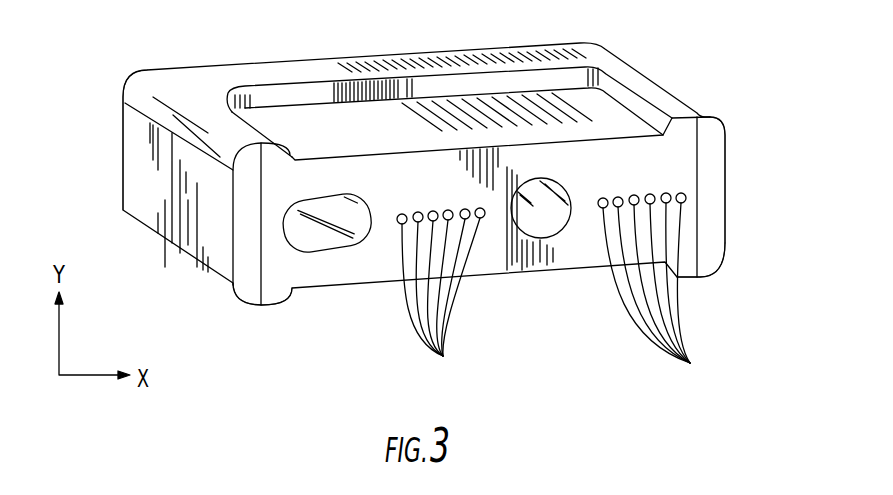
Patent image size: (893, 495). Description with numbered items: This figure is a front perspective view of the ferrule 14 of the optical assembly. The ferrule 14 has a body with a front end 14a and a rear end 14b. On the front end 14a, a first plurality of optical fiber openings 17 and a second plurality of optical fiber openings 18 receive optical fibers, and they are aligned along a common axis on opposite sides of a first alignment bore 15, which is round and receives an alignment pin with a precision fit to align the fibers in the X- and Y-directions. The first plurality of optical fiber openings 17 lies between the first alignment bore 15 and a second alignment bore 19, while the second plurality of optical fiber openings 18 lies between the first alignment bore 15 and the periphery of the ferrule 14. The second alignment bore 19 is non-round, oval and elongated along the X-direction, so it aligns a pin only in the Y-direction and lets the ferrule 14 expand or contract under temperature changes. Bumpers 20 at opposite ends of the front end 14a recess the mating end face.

The ferrule 14 is at (658, 50).
The front end 14a is at (688, 172).
The rear end 14b is at (180, 68).
The first alignment bore 15 is at (557, 180).
The first plurality of optical fiber openings 17 is at (443, 356).
The second plurality of optical fiber openings 18 is at (690, 363).
The second alignment bore 19 is at (293, 210).
The bumpers 20 is at (243, 275).